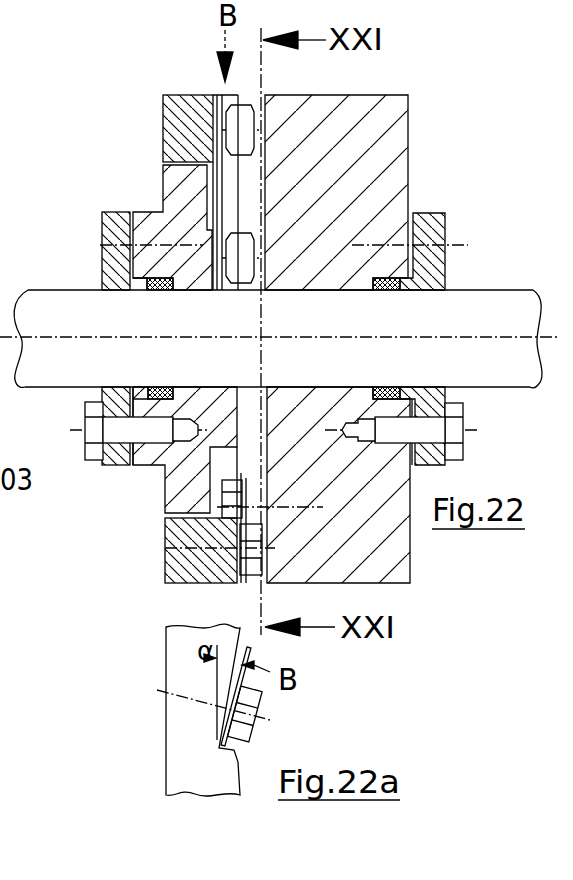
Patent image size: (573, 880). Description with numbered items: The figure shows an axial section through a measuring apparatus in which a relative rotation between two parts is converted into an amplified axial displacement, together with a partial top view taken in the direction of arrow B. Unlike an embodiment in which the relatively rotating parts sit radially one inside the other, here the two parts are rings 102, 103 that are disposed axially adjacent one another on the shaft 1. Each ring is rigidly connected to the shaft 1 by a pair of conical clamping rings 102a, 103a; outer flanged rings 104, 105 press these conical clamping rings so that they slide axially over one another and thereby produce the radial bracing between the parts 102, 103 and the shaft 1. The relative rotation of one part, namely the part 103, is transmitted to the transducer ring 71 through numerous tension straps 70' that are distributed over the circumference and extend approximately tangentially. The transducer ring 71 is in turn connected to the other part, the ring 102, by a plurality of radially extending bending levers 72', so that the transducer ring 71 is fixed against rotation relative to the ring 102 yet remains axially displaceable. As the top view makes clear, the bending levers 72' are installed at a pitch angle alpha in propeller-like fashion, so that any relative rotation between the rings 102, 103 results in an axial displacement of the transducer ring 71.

In FIG. 22, the shaft 1 is at (455, 322).
In FIG. 22, the tension straps 70' is at (143, 473).
In FIG. 22, the transducer ring 71 is at (187, 112).
In FIG. 22A, the transducer ring 71 is at (183, 684).
In FIG. 22, the bending levers 72' is at (154, 339).
In FIG. 22A, the bending levers 72' is at (150, 714).
In FIG. 22, the ring 102 is at (170, 238).
In FIG. 22, the conical clamping ring 102a is at (165, 280).
In FIG. 22, the ring 103 is at (373, 170).
In FIG. 22, the conical clamping ring 103a is at (380, 277).
In FIG. 22, the outer flanged ring 104 is at (102, 392).
In FIG. 22, the outer flanged ring 105 is at (447, 391).